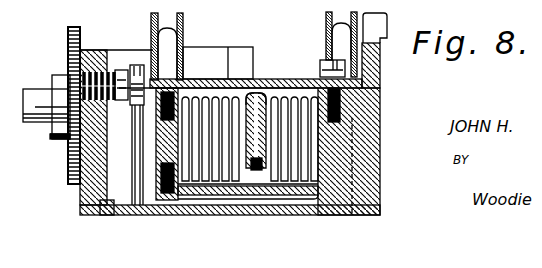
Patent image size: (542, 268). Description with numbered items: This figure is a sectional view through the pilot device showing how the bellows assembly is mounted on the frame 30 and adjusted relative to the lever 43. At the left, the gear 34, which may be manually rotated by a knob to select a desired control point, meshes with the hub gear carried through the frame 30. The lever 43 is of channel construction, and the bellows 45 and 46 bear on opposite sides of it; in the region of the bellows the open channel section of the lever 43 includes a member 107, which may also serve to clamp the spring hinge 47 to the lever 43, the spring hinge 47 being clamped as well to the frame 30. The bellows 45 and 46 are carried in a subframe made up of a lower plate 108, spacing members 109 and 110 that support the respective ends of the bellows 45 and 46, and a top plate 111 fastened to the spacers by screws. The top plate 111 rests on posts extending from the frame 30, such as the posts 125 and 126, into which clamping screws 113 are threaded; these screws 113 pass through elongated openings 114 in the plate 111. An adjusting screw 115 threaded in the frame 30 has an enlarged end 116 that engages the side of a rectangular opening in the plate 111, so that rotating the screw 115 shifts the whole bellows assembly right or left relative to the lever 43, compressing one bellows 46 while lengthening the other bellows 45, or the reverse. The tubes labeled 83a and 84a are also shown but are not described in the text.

The frame 30 is at (92, 201).
The gear 34 is at (68, 42).
The lever 43 is at (255, 98).
The bellows 45 is at (233, 178).
The bellows 46 is at (307, 178).
The spring hinge 47 is at (260, 165).
The left tube 83a is at (181, 25).
The right tube 84a is at (329, 18).
The member 107 is at (262, 100).
The lower plate 108 is at (210, 194).
The spacing member 109 is at (158, 178).
The spacing member 110 is at (343, 172).
The top plate 111 is at (206, 79).
The clamping screws 113 is at (123, 68).
The elongated openings 114 is at (363, 81).
The adjusting screw 115 is at (93, 72).
The enlarged end 116 is at (138, 66).
The post 125 is at (327, 153).
The post 126 is at (104, 206).